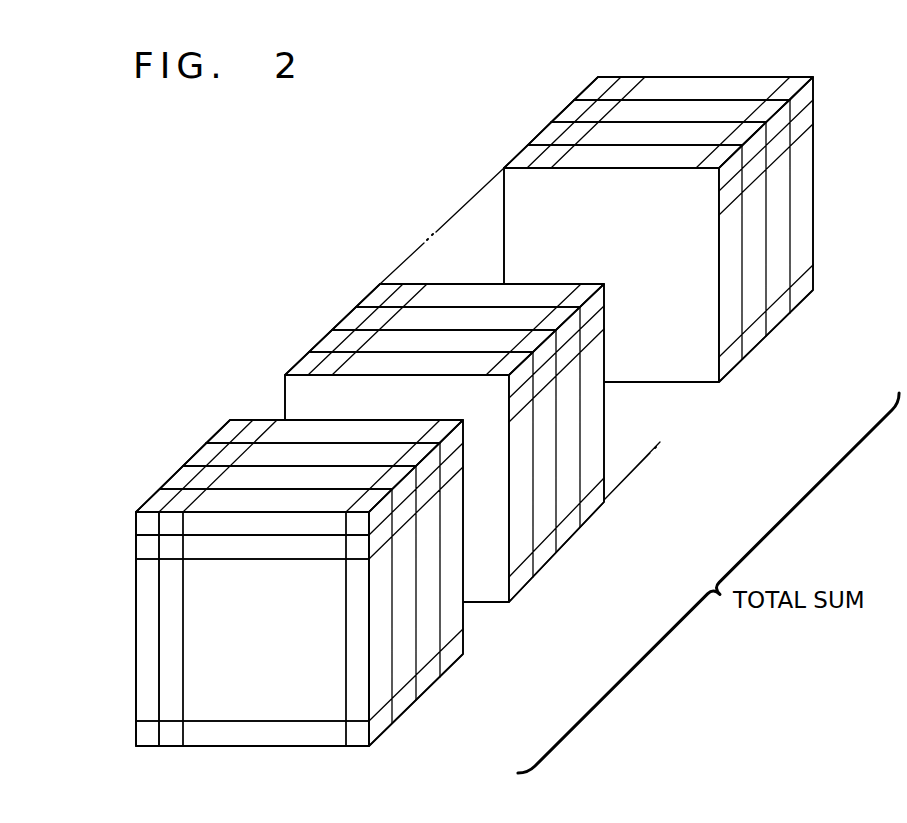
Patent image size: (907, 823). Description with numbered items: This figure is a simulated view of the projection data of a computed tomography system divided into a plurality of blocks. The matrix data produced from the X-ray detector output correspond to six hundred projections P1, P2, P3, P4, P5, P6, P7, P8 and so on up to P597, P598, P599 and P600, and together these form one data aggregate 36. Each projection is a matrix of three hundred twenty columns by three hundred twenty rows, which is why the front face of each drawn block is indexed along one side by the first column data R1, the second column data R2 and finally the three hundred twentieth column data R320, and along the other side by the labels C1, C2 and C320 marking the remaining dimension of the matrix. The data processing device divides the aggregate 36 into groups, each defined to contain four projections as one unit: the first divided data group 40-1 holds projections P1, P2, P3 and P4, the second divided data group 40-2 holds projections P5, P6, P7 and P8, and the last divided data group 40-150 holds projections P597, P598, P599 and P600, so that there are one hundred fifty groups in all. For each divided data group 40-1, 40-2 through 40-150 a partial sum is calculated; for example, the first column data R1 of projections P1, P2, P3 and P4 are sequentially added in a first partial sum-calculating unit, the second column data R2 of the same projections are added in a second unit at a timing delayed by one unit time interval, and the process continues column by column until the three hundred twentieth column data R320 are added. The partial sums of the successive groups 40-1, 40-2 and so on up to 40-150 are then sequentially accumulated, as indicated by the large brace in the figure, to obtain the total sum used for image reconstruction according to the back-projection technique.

The data aggregate 36 is at (217, 240).
The divided data group 40-1 is at (473, 661).
The divided data group 40-2 is at (612, 510).
The divided data group 40-150 is at (826, 295).
The projection P1 is at (148, 500).
The projection P2 is at (172, 478).
The projection P3 is at (196, 453).
The projection P4 is at (220, 430).
The projection P5 is at (298, 363).
The projection P6 is at (322, 340).
The projection P7 is at (346, 317).
The projection P8 is at (371, 293).
The projection P597 is at (515, 157).
The projection P598 is at (541, 132).
The projection P599 is at (562, 112).
The projection P600 is at (585, 90).
The first column data R1 is at (136, 524).
The second column data R2 is at (136, 549).
The 320th column data R320 is at (136, 729).
The column 1 C1 is at (157, 748).
The column 2 C2 is at (183, 748).
The column 320 C320 is at (348, 748).